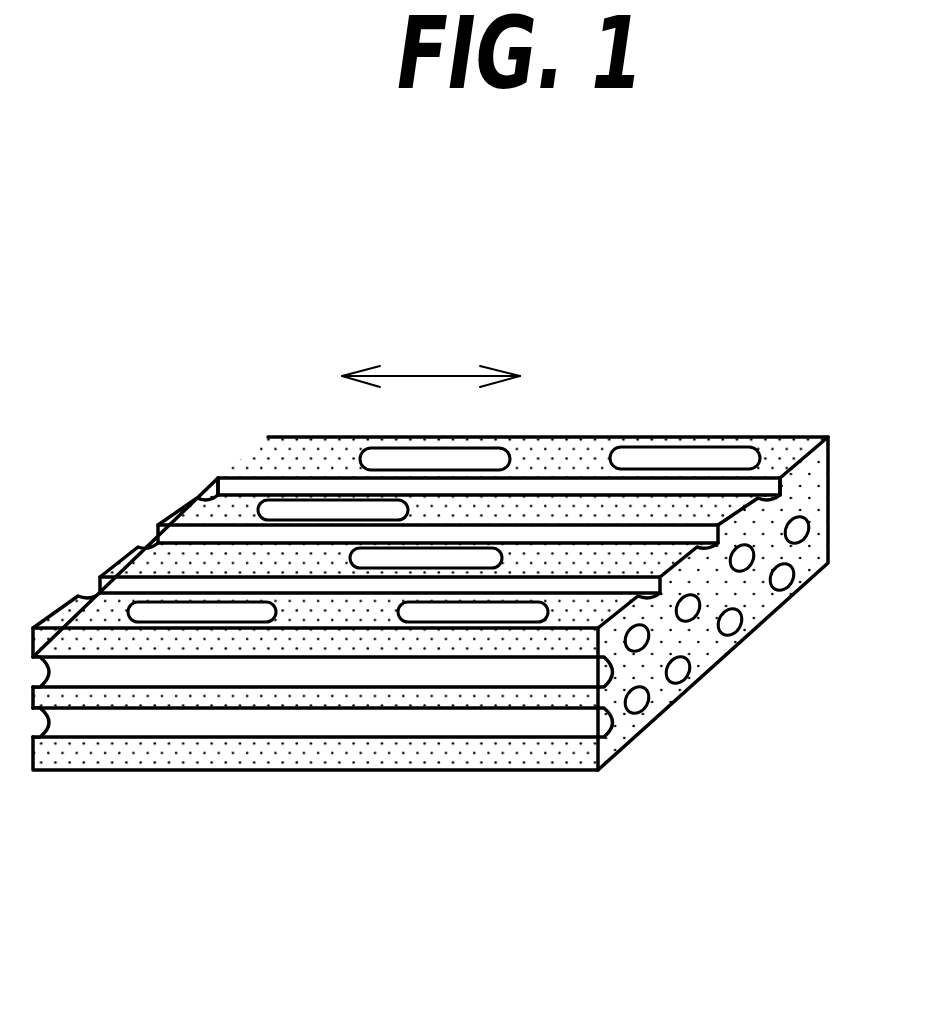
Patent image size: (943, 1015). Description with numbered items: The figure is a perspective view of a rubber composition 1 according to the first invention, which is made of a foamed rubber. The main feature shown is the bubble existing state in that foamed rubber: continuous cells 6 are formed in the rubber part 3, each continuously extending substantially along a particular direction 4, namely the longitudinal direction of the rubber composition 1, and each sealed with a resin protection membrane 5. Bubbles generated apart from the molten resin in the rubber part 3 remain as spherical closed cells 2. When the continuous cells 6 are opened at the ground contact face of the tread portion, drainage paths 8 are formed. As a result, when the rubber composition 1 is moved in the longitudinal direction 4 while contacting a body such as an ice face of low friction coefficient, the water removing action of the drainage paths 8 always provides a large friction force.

The rubber composition 1 is at (460, 562).
The spherical closed cell 2 is at (722, 437).
The rubber part 3 is at (140, 697).
The particular direction 4 is at (431, 351).
The resin protection membrane 5 is at (797, 515).
The continuous cell 6 is at (747, 572).
The drainage path 8 is at (250, 485).